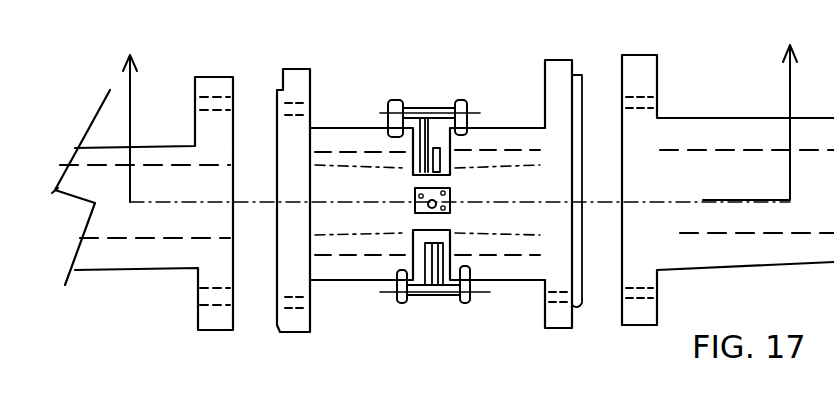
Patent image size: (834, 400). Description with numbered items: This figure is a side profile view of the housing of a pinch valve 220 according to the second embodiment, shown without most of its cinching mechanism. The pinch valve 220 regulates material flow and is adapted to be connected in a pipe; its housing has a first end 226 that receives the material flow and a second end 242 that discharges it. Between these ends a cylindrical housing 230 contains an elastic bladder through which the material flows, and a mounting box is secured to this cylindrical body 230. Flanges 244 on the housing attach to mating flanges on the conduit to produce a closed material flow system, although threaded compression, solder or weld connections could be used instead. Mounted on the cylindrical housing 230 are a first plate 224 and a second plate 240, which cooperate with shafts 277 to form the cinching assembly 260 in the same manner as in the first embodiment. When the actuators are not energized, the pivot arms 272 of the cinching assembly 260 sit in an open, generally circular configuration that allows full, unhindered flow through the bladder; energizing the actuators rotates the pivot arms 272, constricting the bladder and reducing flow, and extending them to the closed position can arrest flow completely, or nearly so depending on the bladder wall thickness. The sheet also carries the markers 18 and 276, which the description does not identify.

The section line 18 is at (470, 113).
The pinch valve 220 is at (527, 118).
The first plate 224 is at (395, 100).
The first end 226 is at (268, 186).
The cylindrical housing 230 is at (336, 128).
The second plate 240 is at (197, 67).
The second end 242 is at (600, 125).
The flanges 244 is at (563, 165).
The cinching assembly 260 is at (402, 88).
The pivot arms 272 is at (425, 135).
The sensor stem 276 is at (424, 108).
The shafts 277 is at (413, 106).